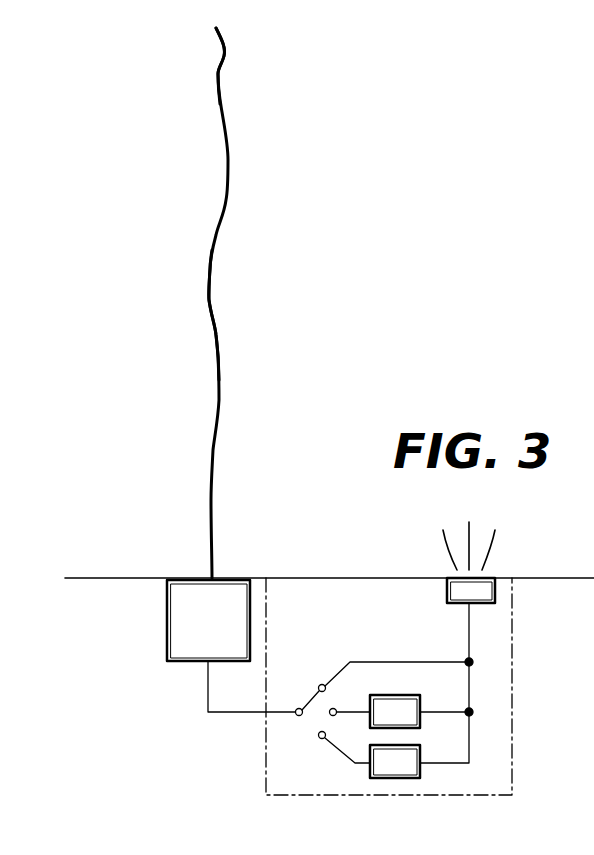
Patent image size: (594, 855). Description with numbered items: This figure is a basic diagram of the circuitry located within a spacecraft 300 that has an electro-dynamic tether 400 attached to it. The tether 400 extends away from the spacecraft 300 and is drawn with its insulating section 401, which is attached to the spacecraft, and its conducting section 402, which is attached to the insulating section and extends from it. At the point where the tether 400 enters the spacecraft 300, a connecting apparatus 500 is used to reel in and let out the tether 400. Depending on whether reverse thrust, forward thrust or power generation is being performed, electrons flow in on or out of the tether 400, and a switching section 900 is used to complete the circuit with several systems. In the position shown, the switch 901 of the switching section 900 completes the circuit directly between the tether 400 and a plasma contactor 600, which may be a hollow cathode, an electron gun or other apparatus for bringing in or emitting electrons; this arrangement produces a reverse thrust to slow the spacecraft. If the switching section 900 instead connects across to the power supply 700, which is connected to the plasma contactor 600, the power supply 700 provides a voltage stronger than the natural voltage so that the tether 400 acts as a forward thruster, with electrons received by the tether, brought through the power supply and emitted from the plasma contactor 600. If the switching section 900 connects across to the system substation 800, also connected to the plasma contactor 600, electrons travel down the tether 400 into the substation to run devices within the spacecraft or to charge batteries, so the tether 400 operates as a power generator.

The spacecraft 300 is at (542, 578).
The electro-dynamic tether 400 is at (252, 200).
The insulating section 401 is at (210, 308).
The conducting section 402 is at (218, 68).
The connecting apparatus 500 is at (172, 602).
The plasma contactor 600 is at (448, 600).
The power supply 700 is at (409, 695).
The system substation 800 is at (368, 771).
The switching section 900 is at (512, 672).
The selector switch 901 is at (292, 728).